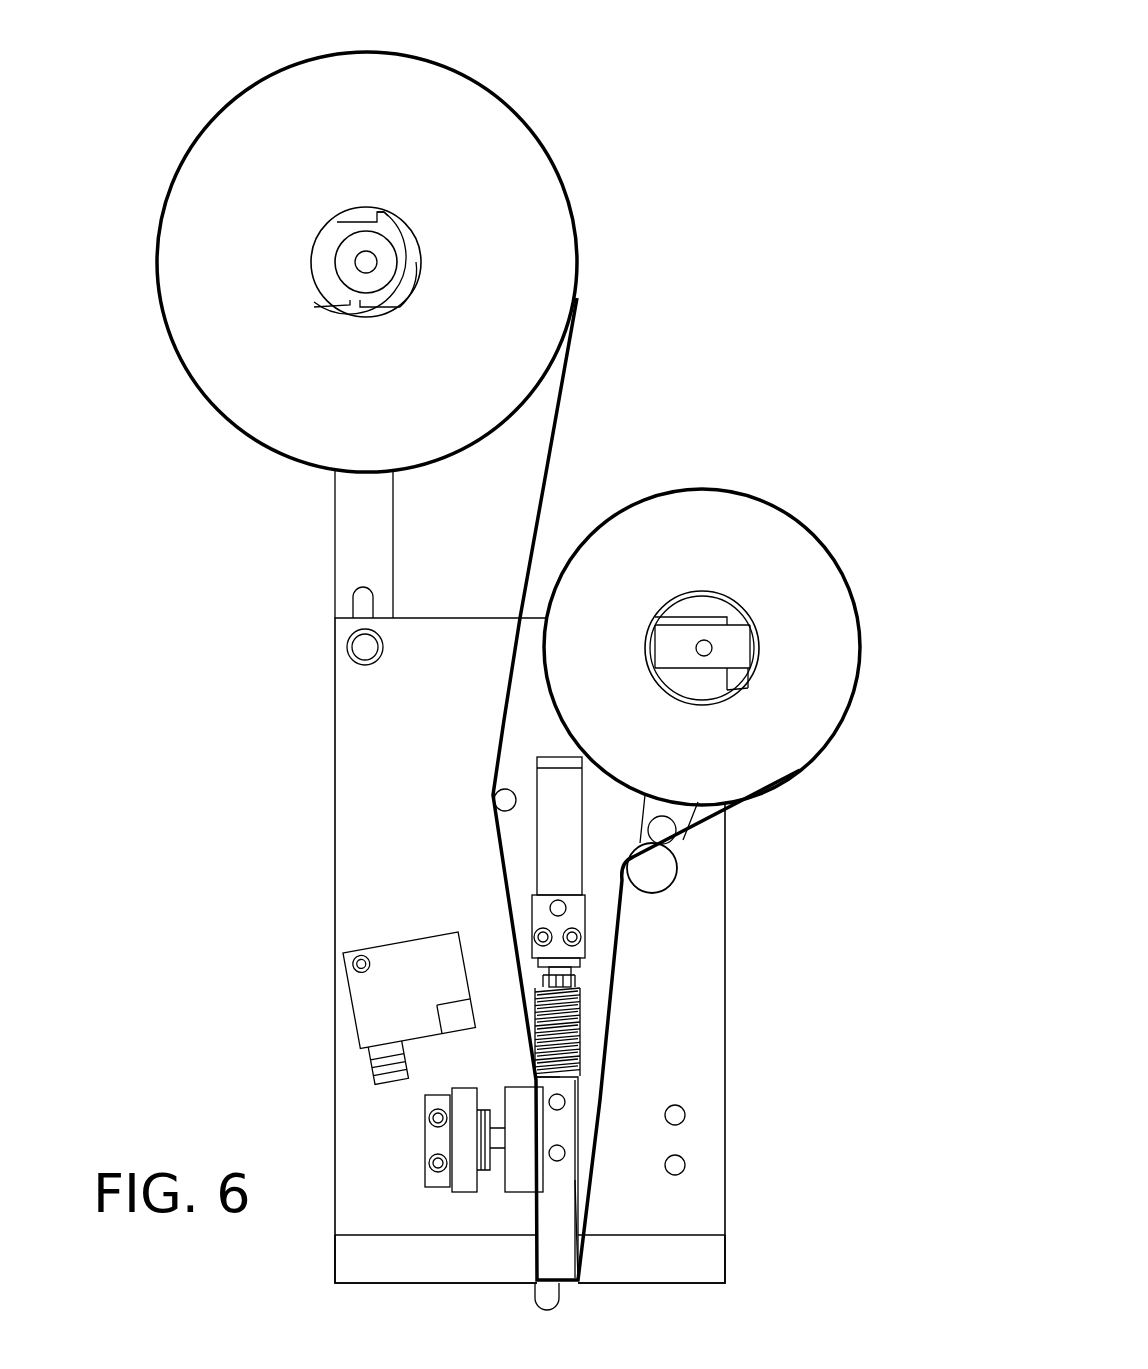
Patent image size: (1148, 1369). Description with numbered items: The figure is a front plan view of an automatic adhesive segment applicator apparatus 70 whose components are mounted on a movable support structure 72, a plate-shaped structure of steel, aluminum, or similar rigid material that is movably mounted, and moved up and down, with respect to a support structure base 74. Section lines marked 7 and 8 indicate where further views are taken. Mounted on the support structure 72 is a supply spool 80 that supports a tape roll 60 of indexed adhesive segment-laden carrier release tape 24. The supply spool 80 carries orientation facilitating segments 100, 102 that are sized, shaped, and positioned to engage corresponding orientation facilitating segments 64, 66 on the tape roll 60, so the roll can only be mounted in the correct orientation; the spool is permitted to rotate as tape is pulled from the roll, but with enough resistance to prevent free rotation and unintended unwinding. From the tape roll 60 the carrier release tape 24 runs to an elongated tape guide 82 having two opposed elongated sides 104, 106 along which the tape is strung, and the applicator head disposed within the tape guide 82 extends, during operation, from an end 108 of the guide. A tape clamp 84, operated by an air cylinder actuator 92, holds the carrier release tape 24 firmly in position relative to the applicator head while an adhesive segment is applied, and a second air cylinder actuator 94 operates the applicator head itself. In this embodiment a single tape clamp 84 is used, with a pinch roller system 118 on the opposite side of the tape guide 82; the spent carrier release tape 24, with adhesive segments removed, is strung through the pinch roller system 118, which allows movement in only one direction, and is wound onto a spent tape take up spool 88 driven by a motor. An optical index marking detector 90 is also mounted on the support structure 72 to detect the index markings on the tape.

The section line 7- 7 is at (838, 1329).
The section line 8- 8 is at (602, 1308).
The carrier release tape 24 is at (509, 680).
The tape roll 60 is at (557, 170).
The orientation facilitating segment 64 is at (375, 315).
The orientation facilitating segment 66 is at (365, 213).
The automatic adhesive segment applicator apparatus 70 is at (655, 321).
The movable support structure 72 is at (707, 1002).
The support structure base 74 is at (723, 1250).
The supply spool 80 is at (423, 248).
The tape guide 82 is at (582, 1113).
The tape clamp 84 is at (518, 1192).
The take up spool 88 is at (753, 500).
The optical index marking detector 90 is at (458, 1015).
The air cylinder actuator 92 is at (460, 1195).
The air cylinder actuator 94 is at (558, 778).
The orientation facilitating segment 100 is at (337, 308).
The orientation facilitating segment 102 is at (386, 217).
The elongated side 104 is at (533, 1083).
The elongated side 106 is at (582, 1173).
The end of the tape guide 108 is at (530, 1292).
The pinch roller system 118 is at (673, 873).